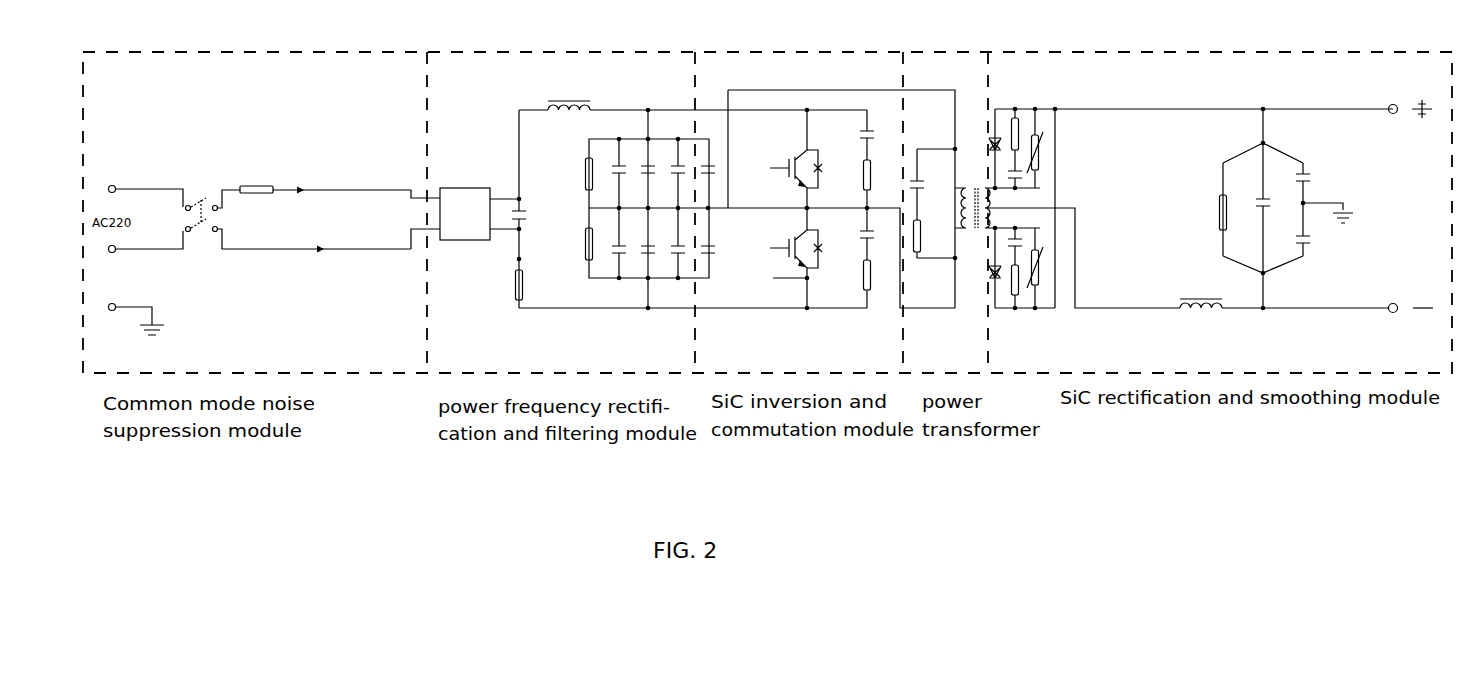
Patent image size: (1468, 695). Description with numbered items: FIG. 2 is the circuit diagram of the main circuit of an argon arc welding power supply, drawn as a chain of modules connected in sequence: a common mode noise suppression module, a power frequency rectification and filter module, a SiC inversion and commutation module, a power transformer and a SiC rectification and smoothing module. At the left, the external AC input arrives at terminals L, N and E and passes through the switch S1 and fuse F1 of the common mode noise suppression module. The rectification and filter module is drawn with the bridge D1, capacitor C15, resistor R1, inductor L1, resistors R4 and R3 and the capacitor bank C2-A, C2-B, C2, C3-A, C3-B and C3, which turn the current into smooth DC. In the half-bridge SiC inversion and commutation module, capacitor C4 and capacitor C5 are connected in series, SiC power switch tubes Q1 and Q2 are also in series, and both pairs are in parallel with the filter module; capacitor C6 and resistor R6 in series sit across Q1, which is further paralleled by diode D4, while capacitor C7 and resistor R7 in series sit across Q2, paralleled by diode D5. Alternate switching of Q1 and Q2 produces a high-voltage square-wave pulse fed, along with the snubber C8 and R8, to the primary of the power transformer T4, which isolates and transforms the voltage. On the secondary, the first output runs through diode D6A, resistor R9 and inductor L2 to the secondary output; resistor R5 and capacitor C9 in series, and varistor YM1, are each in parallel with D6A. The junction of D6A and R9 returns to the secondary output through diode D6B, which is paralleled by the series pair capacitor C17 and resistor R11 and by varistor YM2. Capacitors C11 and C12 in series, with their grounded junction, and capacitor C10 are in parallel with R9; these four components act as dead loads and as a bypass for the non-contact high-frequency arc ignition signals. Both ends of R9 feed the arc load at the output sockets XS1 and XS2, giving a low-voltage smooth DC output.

The line terminal L is at (137, 194).
The neutral terminal N is at (137, 244).
The earth terminal E is at (128, 317).
The power switch S1 is at (299, 214).
The fuse F1 is at (340, 211).
The rectifier bridge D1 is at (480, 205).
The capacitor C15 is at (531, 209).
The resistor R1 is at (530, 283).
The inductor L1 is at (693, 196).
The resistor R4 is at (574, 174).
The resistor R3 is at (574, 244).
The capacitor C2-A is at (627, 174).
The capacitor C2-B is at (656, 174).
The capacitor C2 is at (684, 174).
The capacitor C4 is at (713, 179).
The capacitor C3-A is at (627, 244).
The capacitor C3-B is at (656, 250).
The capacitor C3 is at (684, 244).
The capacitor C5 is at (713, 237).
The SiC power switch tube Q1 is at (789, 160).
The SiC power switch tube Q2 is at (789, 258).
The diode D4 is at (830, 169).
The diode D5 is at (830, 249).
The capacitor C6 is at (876, 135).
The resistor R6 is at (878, 192).
The capacitor C7 is at (876, 237).
The resistor R7 is at (878, 281).
The capacitor C8 is at (933, 183).
The resistor R8 is at (936, 235).
The power transformer T4 is at (1067, 235).
The diode D6A is at (978, 149).
The diode D6B is at (978, 267).
The resistor R5 is at (1022, 140).
The capacitor C9 is at (1019, 180).
The varistor YM1 is at (1041, 148).
The capacitor C17 is at (1010, 245).
The resistor R11 is at (1025, 286).
The varistor YM2 is at (1042, 268).
The resistor R9 is at (1234, 212).
The capacitor C10 is at (1276, 194).
The capacitor C11 is at (1324, 196).
The capacitor C12 is at (1317, 239).
The inductor L2 is at (1284, 295).
The work output socket XS1 is at (1407, 111).
The electrode output socket XS2 is at (1390, 308).